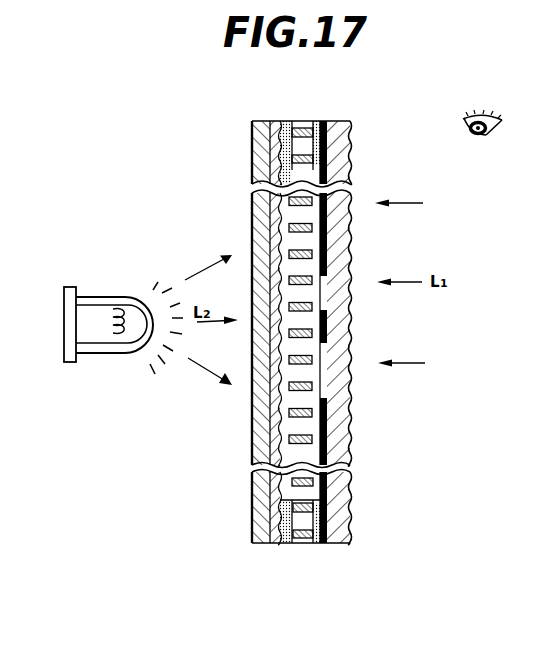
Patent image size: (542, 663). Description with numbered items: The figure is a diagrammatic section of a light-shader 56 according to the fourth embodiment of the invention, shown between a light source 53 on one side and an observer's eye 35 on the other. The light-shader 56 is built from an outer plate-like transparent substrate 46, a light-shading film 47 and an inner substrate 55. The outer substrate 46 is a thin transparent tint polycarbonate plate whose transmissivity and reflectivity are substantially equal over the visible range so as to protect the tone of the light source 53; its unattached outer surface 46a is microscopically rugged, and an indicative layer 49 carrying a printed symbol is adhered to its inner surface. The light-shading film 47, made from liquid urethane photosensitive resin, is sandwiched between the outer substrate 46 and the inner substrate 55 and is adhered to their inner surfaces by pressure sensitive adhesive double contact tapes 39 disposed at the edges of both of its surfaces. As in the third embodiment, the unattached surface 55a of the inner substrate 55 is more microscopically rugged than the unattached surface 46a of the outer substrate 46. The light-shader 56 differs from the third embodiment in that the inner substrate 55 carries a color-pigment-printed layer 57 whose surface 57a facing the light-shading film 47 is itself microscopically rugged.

The observer's eye 35 is at (483, 117).
The pressure sensitive adhesive double contact tapes 39 is at (290, 543).
The outer plate-like transparent substrate 46 is at (340, 440).
The microscopically rugged unattached surface 46a is at (344, 401).
The light-shading film 47 is at (298, 131).
The indicative layer 49 is at (347, 490).
The light source 53 is at (110, 302).
The inner substrate 55 is at (268, 516).
The unattached surface of inner substrate 55a is at (262, 437).
The light-shader 56 is at (370, 250).
The color-pigment-printed layer 57 is at (258, 479).
The surface of color-pigment-printed layer 57a is at (282, 412).